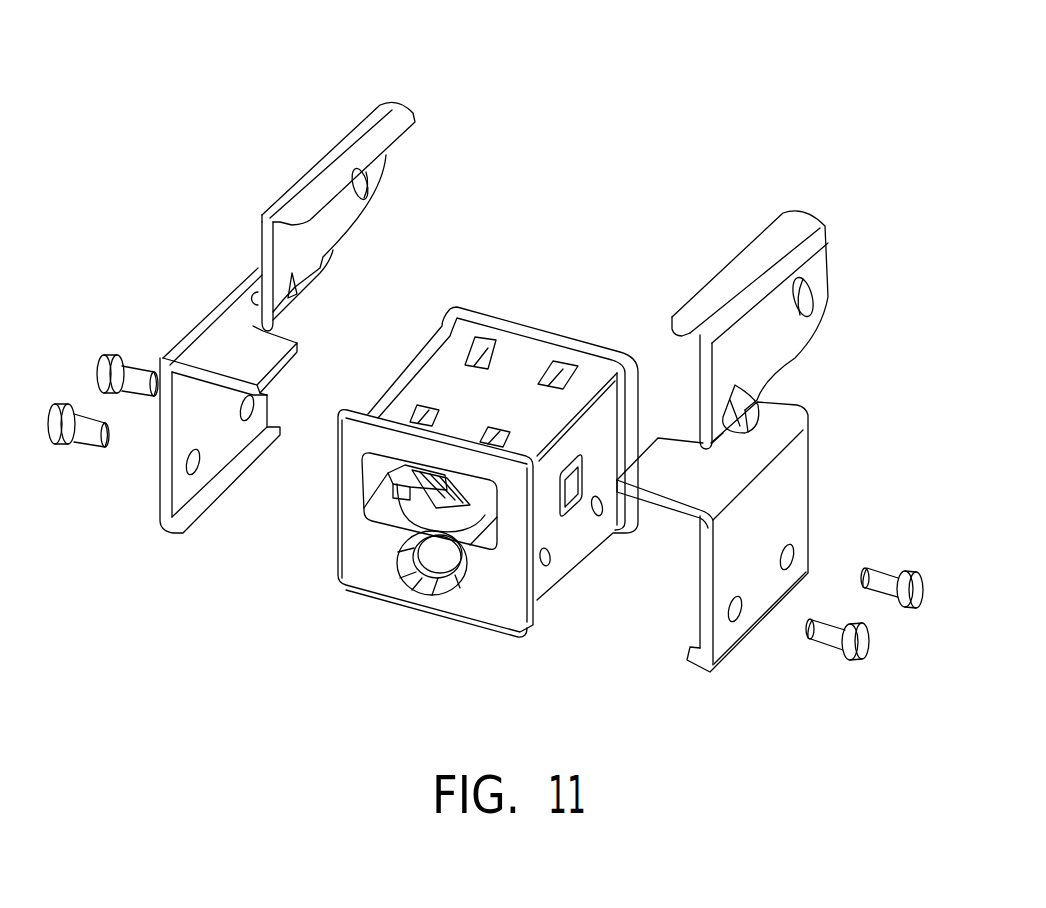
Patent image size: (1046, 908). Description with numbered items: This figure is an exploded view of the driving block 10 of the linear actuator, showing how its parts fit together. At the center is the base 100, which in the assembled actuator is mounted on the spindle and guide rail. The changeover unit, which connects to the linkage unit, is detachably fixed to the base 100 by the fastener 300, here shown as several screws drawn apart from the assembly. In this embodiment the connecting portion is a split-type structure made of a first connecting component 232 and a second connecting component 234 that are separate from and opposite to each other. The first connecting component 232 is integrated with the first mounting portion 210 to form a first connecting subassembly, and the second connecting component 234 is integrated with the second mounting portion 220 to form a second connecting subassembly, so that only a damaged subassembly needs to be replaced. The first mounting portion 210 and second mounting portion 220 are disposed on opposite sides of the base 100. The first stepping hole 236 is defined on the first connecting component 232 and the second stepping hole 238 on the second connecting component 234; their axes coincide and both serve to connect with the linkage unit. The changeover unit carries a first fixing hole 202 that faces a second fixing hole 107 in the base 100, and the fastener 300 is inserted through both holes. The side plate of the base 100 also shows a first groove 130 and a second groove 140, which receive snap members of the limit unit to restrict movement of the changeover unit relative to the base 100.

The driving block 10 is at (252, 72).
The base 100 is at (358, 580).
The second fixing hole 107 is at (556, 562).
The first groove 130 is at (495, 352).
The second groove 140 is at (571, 364).
The first fixing hole 202 is at (745, 617).
The first mounting portion 210 is at (797, 478).
The second mounting portion 220 is at (203, 320).
The first connecting component 232 is at (797, 351).
The second connecting component 234 is at (302, 178).
The first stepping hole 236 is at (812, 303).
The second stepping hole 238 is at (378, 188).
The fastener 300 is at (863, 647).